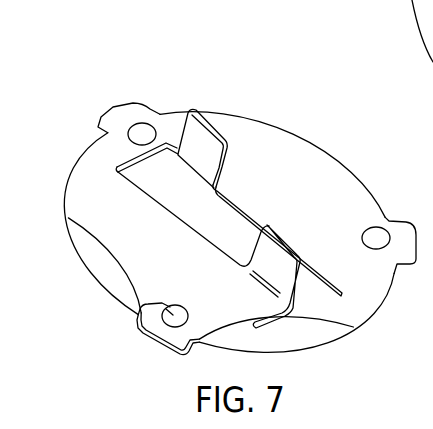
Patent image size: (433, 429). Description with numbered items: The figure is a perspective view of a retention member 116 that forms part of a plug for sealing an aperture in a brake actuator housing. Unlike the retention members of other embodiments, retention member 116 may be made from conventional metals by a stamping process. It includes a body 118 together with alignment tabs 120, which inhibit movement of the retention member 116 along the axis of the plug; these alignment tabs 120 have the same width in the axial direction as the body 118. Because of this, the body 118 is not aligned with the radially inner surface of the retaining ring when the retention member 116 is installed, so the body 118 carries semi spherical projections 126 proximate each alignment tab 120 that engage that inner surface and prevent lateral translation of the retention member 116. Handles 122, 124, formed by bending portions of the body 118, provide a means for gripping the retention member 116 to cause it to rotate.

The retention member 116 is at (288, 152).
The body 118 is at (140, 267).
The alignment tabs 120 is at (120, 114).
The handle 122 is at (203, 150).
The handle 124 is at (277, 272).
The semi spherical projections 126 is at (140, 313).